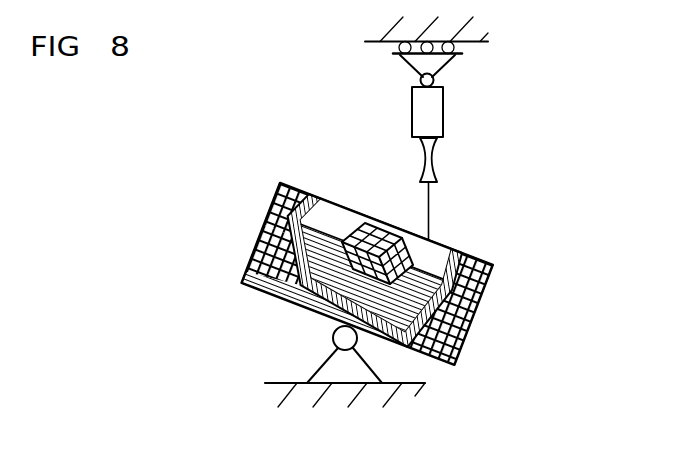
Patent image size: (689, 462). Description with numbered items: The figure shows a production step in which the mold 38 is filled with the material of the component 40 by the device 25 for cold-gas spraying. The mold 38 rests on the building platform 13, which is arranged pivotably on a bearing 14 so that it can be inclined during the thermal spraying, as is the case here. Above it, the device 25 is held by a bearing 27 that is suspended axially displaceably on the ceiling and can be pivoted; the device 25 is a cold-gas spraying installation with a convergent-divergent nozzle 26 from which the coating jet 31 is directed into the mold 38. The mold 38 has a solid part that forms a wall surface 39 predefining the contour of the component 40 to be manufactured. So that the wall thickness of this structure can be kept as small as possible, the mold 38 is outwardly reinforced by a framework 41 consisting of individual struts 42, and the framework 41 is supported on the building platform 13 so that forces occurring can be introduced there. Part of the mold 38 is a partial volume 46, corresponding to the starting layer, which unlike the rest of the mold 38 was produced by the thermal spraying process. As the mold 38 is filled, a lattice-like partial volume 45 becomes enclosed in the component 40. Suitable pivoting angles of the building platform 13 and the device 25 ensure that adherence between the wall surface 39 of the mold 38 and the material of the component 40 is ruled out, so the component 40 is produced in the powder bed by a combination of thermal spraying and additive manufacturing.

The building platform 13 is at (368, 277).
The bearing 14 is at (357, 362).
The device for thermal spraying 25 is at (457, 102).
The convergent-divergent nozzle 26 is at (432, 176).
The bearing 27 is at (421, 63).
The coating jet 31 is at (431, 217).
The mold 38 is at (368, 277).
The wall surface 39 is at (325, 212).
The component 40 is at (262, 235).
The framework 41 is at (248, 257).
The struts 42 is at (480, 305).
The partial volume 45 is at (374, 228).
The partial volume 46 is at (331, 298).